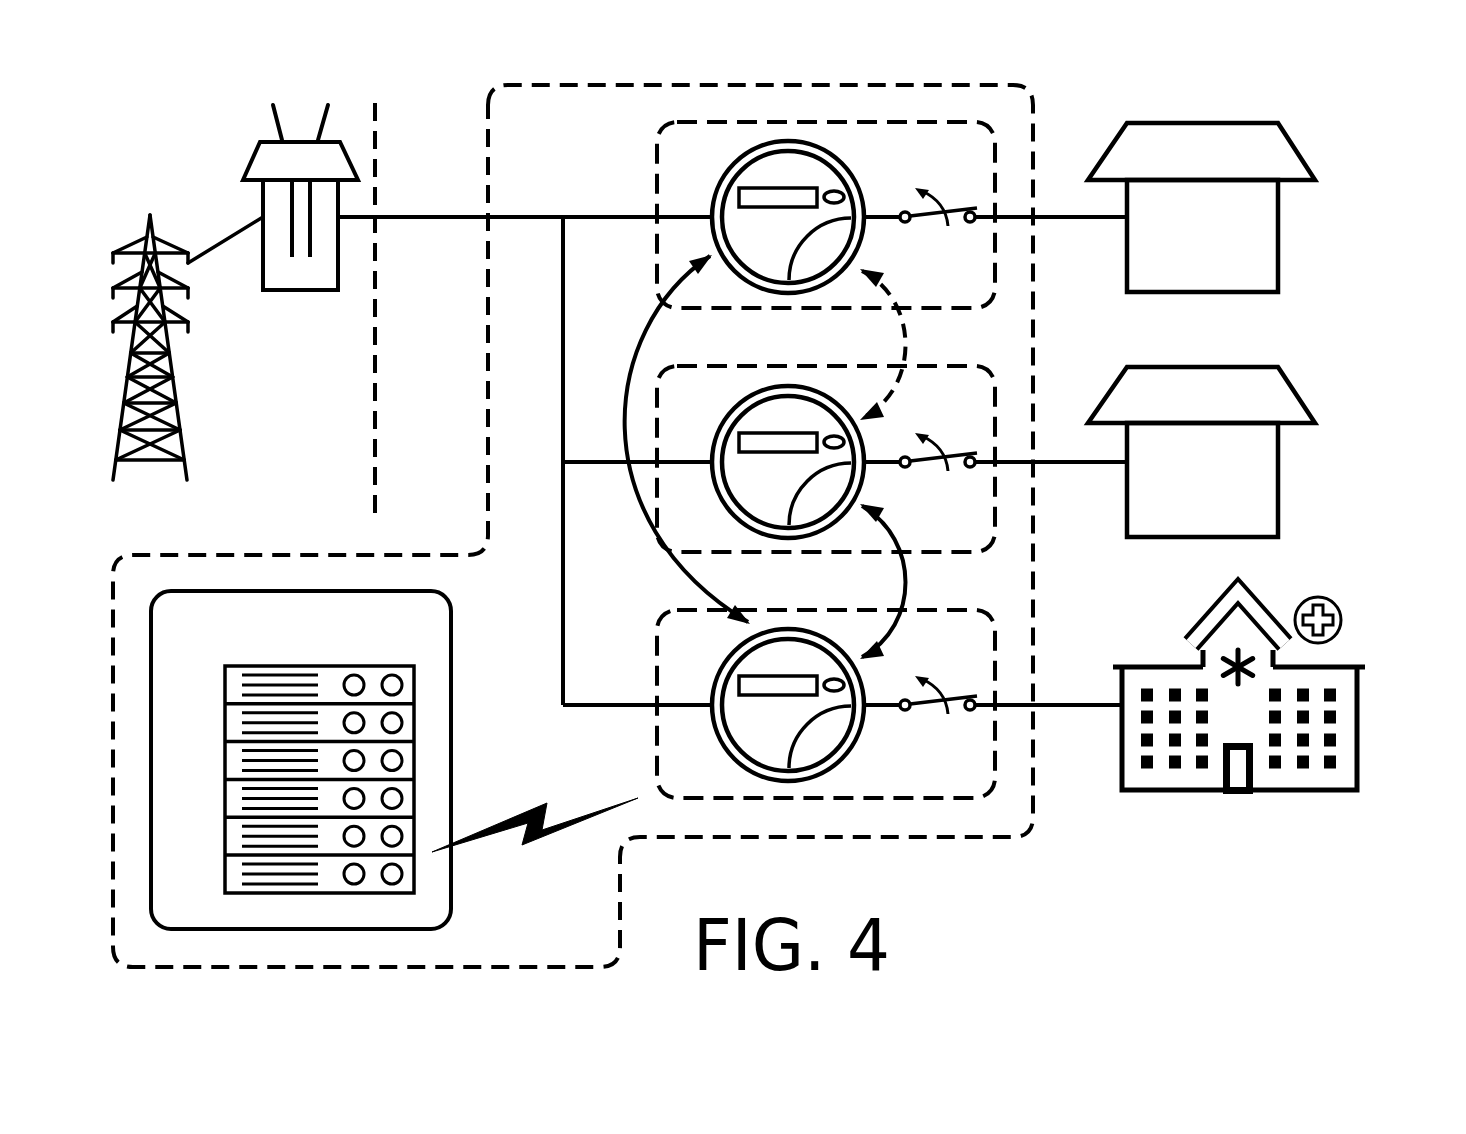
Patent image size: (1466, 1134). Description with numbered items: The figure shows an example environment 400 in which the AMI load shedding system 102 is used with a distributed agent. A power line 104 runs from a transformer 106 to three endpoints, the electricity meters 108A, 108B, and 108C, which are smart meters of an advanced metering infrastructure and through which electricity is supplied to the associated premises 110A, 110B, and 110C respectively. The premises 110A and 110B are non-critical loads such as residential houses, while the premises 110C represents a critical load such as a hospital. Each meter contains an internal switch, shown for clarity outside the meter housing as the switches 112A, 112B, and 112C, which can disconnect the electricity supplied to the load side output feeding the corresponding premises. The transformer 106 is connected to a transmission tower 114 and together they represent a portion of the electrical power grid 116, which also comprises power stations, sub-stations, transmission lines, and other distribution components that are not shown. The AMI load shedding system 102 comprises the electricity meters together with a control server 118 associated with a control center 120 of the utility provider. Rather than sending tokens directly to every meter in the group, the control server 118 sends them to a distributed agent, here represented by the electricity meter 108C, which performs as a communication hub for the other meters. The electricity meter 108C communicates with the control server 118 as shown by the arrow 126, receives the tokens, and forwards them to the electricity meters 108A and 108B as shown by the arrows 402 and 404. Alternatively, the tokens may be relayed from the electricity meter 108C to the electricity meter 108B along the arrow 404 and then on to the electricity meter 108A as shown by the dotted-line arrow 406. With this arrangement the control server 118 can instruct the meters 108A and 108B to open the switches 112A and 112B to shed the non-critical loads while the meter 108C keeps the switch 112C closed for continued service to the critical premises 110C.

The example environment 400 is at (1346, 99).
The AMI load shedding system 102 is at (597, 956).
The power line 104 is at (732, 461).
The transformer 106 is at (300, 214).
The electricity meter 108A is at (726, 157).
The electricity meter 108B is at (726, 401).
The electricity meter 108C is at (726, 645).
The premises 110A is at (1232, 282).
The premises 110B is at (1232, 527).
The premises 110C is at (1239, 706).
The internal switch 112A is at (969, 264).
The internal switch 112B is at (969, 509).
The internal switch 112C is at (969, 752).
The transmission tower 114 is at (188, 361).
The electrical power grid 116 is at (375, 405).
The control server 118 is at (362, 660).
The control center 120 is at (204, 629).
The arrow 126 is at (559, 794).
The arrow 402 is at (664, 318).
The arrow 404 is at (988, 591).
The dotted-line arrow 406 is at (988, 347).